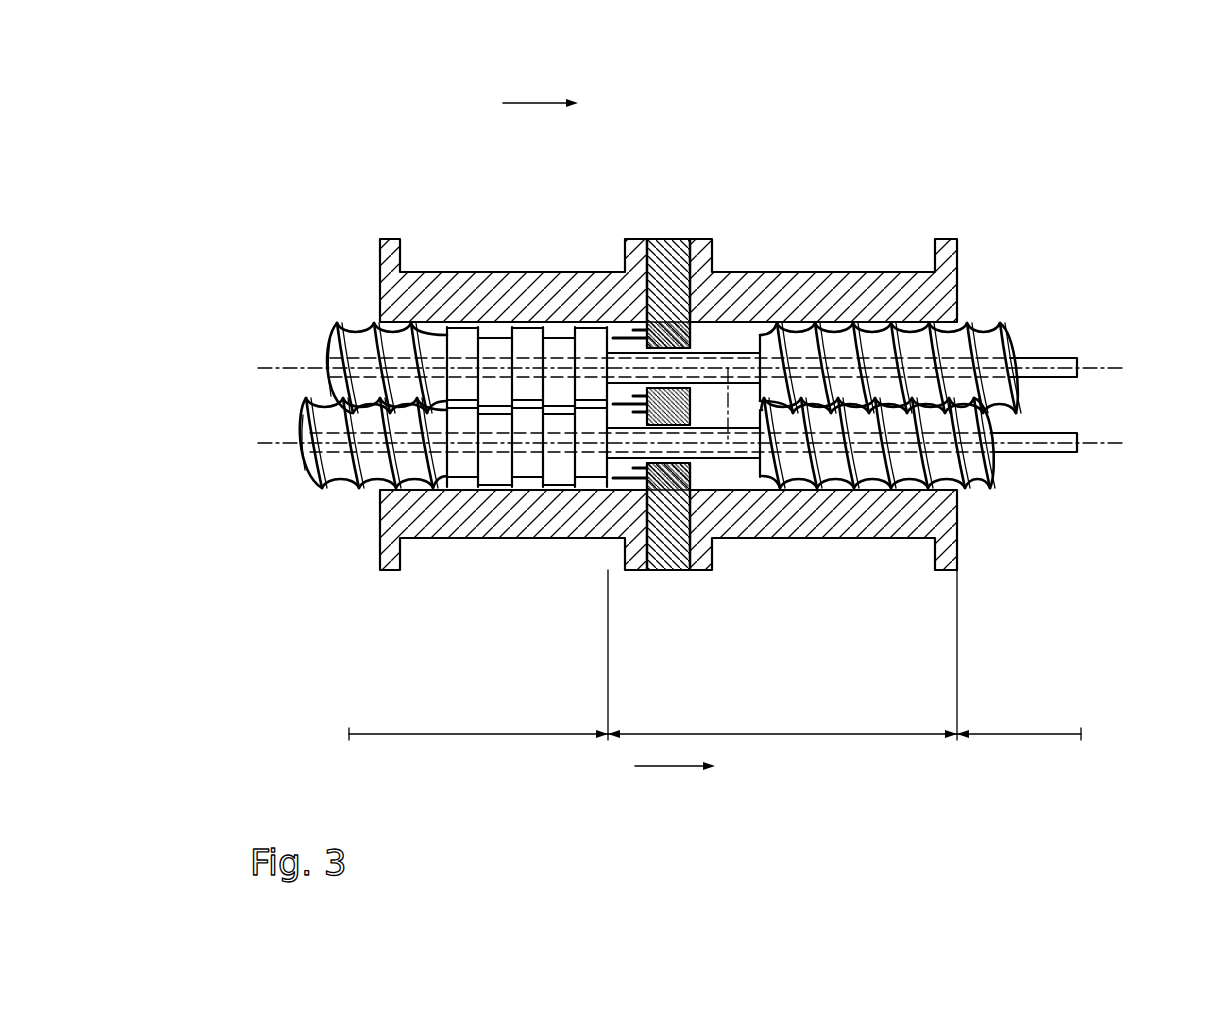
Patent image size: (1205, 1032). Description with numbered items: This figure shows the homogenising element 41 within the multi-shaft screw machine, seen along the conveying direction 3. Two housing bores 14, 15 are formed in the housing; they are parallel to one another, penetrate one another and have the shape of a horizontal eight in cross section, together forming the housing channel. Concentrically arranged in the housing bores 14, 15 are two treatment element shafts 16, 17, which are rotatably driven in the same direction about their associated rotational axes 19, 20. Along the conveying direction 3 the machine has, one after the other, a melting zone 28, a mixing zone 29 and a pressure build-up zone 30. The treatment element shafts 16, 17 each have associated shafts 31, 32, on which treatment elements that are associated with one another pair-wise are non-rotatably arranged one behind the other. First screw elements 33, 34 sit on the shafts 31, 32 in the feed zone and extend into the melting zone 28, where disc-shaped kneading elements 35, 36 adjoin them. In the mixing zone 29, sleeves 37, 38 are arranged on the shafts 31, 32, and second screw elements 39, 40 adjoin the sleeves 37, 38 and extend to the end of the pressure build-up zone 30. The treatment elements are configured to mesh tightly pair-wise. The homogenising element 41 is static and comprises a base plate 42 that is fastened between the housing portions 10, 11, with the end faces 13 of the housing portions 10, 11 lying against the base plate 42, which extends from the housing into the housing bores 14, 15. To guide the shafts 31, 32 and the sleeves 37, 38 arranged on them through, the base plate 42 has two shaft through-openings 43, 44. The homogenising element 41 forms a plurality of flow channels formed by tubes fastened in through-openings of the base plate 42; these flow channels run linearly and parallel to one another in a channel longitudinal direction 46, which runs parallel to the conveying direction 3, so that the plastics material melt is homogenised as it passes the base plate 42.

The conveying direction 3 is at (536, 100).
The housing portion 10 is at (486, 277).
The housing portion 11 is at (800, 277).
The end faces 13 is at (645, 345).
The housing bore 14 is at (326, 529).
The housing bore 15 is at (331, 272).
The treatment element shaft 16 is at (309, 460).
The treatment element shaft 17 is at (322, 351).
The rotational axis 19 is at (292, 443).
The rotational axis 20 is at (297, 368).
The melting zone 28 is at (478, 719).
The mixing zone 29 is at (782, 719).
The pressure build-up zone 30 is at (1019, 719).
The shaft 31 is at (1075, 437).
The shaft 32 is at (1075, 356).
The first screw element 33 is at (368, 470).
The first screw element 34 is at (337, 323).
The kneading element 35 is at (553, 477).
The kneading element 36 is at (537, 338).
The sleeve 37 is at (738, 460).
The sleeve 38 is at (728, 353).
The second screw element 39 is at (835, 470).
The second screw element 40 is at (858, 330).
The homogenising element 41 is at (668, 232).
The base plate 42 is at (678, 570).
The shaft through-opening 43 is at (700, 460).
The shaft through-opening 44 is at (636, 340).
The channel longitudinal direction 46 is at (668, 766).